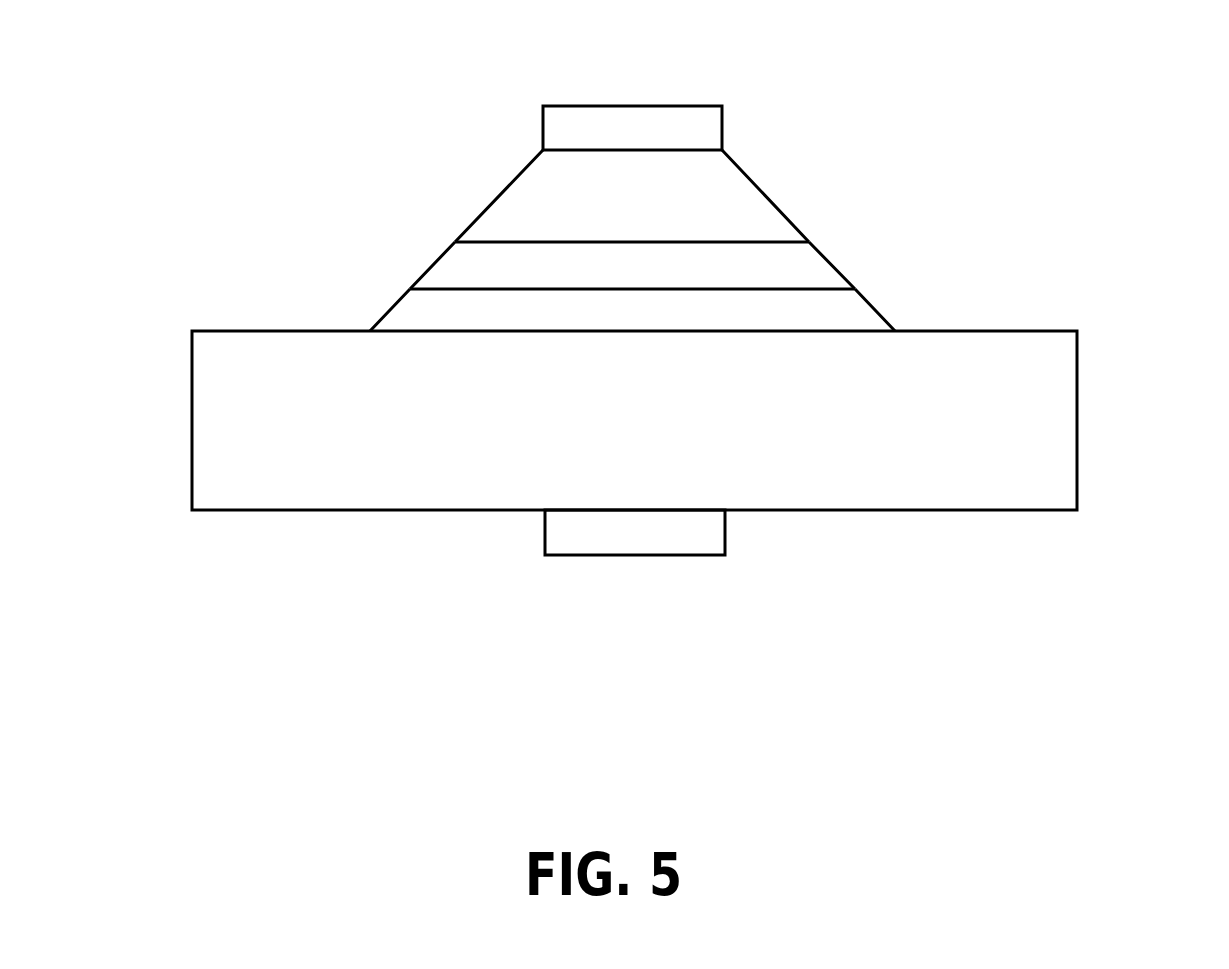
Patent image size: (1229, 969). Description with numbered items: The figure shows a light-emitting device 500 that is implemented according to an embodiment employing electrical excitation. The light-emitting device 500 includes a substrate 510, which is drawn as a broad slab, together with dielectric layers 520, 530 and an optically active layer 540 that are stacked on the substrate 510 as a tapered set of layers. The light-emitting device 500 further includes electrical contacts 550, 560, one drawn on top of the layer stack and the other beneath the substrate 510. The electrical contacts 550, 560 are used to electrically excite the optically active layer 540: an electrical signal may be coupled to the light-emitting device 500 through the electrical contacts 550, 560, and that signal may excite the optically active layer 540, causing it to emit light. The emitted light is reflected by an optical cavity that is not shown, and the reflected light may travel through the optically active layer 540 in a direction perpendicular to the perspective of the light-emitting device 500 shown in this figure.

The light-emitting device 500 is at (242, 648).
The substrate 510 is at (1077, 417).
The dielectric layer 520 is at (875, 308).
The dielectric layer 530 is at (767, 198).
The optically active layer 540 is at (830, 263).
The electrical contact 550 is at (622, 105).
The electrical contact 560 is at (635, 567).